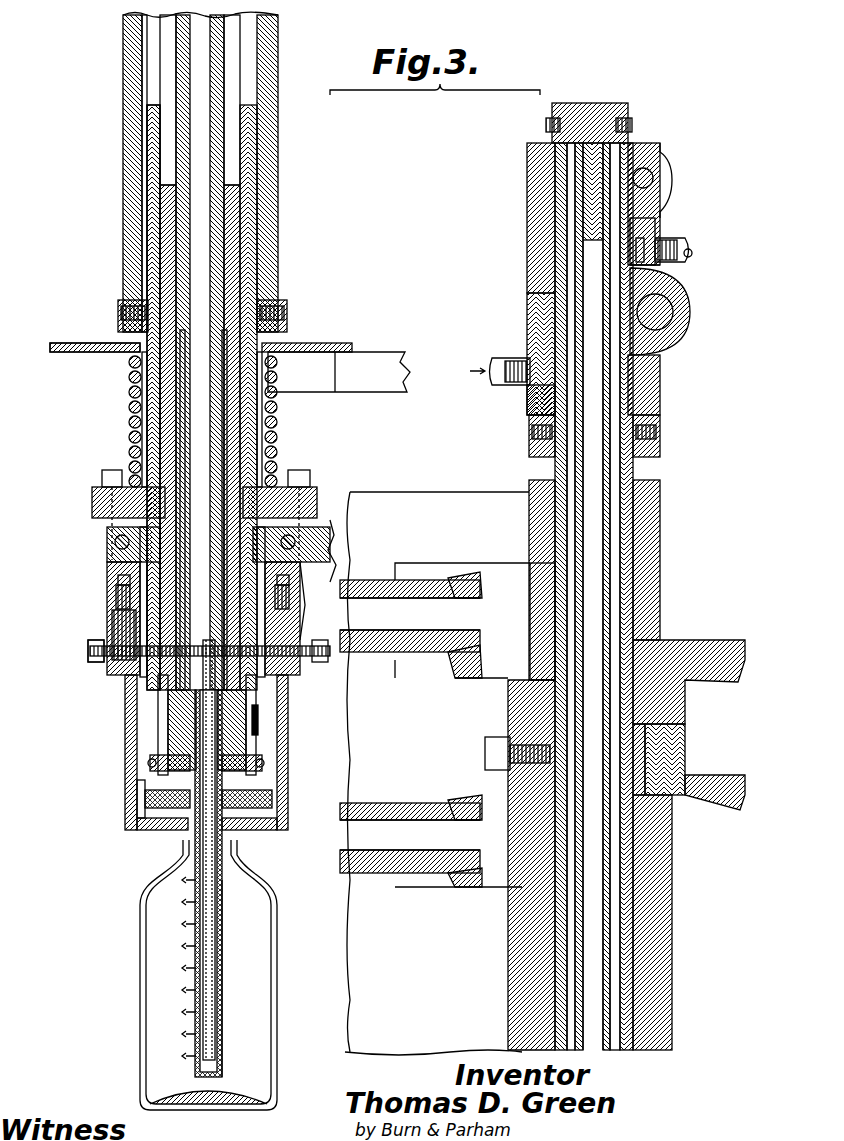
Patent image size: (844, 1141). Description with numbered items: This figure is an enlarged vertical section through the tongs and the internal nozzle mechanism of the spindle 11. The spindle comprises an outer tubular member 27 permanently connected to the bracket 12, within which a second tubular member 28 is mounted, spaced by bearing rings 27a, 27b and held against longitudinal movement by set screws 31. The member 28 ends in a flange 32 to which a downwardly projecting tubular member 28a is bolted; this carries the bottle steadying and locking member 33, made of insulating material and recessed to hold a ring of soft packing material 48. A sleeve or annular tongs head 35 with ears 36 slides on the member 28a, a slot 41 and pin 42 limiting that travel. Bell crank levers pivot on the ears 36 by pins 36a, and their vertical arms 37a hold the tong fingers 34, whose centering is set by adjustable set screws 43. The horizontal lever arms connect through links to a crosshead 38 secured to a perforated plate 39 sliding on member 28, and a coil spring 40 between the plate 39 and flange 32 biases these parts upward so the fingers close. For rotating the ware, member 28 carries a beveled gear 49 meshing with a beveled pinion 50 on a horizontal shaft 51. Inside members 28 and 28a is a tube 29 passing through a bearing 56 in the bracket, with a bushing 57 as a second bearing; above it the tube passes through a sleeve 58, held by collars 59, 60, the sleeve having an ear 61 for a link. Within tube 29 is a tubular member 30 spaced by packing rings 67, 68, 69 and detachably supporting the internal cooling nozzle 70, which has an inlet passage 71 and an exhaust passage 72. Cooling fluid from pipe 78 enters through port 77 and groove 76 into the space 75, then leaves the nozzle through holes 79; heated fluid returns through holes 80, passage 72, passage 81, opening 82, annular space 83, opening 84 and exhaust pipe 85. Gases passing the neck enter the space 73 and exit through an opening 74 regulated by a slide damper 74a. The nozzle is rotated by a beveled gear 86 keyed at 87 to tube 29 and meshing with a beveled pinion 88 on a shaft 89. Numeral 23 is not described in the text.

The spindle 11 is at (325, 205).
The bracket 12 is at (425, 495).
The locking nut 23 is at (95, 650).
The outer tubular member 27 is at (281, 70).
The bearing ring 27a is at (672, 830).
The bearing ring 27b is at (258, 135).
The second tubular member 28 is at (245, 50).
The downwardly projecting tubular member 28a is at (250, 695).
The tube 29 is at (230, 35).
The tubular member 30 is at (150, 28).
The set screws 31 is at (125, 312).
The flange 32 is at (285, 487).
The bottle steadying and locking member 33 is at (150, 790).
The tong fingers 34 is at (282, 800).
The sleeve or annular tongs head 35 is at (140, 560).
The ears 36 is at (108, 532).
The pins 36a is at (115, 542).
The vertical arms 37a is at (112, 580).
The crosshead 38 is at (405, 370).
The perforated plate 39 is at (330, 343).
The coil spring 40 is at (280, 410).
The slot 41 is at (108, 626).
The pin 42 is at (88, 652).
The adjustable set screws 43 is at (300, 640).
The packing material ring 48 is at (138, 793).
The beveled gear 49 is at (665, 745).
The beveled pinion 50 is at (418, 877).
The horizontal shaft 51 is at (350, 835).
The bearing 56 is at (660, 565).
The bushing 57 is at (160, 210).
The sleeve 58 is at (655, 268).
The collar 59 is at (662, 450).
The collar 60 is at (655, 166).
The ear 61 is at (660, 318).
The packing ring 67 is at (560, 300).
The packing ring 68 is at (565, 150).
The packing ring 69 is at (182, 710).
The internal cooling nozzle 70 is at (192, 860).
The cooling fluid inlet passage 71 is at (207, 890).
The exhaust passage 72 is at (215, 880).
The space 73 is at (165, 740).
The opening 74 is at (250, 740).
The slide damper 74a is at (258, 715).
The space 75 is at (215, 340).
The groove 76 is at (680, 345).
The port 77 is at (530, 380).
The pipe 78 is at (510, 360).
The holes 79 is at (198, 992).
The holes 80 is at (222, 1010).
The passage 81 is at (200, 445).
The opening 82 is at (640, 222).
The annular space 83 is at (645, 232).
The opening 84 is at (660, 245).
The exhaust pipe 85 is at (685, 250).
The beveled gear 86 is at (650, 640).
The key 87 is at (543, 623).
The beveled pinion 88 is at (448, 660).
The shaft 89 is at (370, 610).